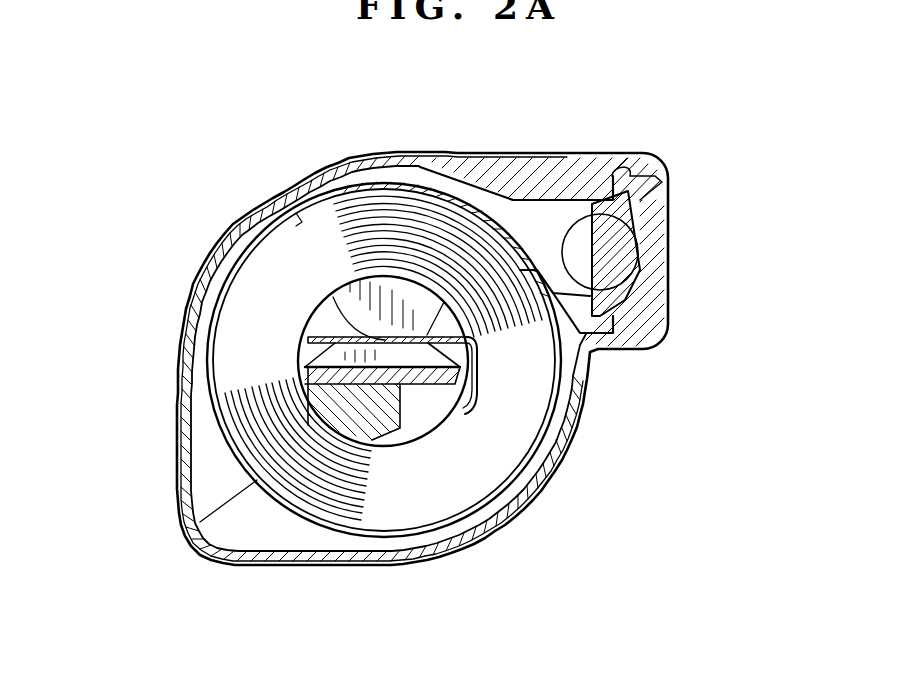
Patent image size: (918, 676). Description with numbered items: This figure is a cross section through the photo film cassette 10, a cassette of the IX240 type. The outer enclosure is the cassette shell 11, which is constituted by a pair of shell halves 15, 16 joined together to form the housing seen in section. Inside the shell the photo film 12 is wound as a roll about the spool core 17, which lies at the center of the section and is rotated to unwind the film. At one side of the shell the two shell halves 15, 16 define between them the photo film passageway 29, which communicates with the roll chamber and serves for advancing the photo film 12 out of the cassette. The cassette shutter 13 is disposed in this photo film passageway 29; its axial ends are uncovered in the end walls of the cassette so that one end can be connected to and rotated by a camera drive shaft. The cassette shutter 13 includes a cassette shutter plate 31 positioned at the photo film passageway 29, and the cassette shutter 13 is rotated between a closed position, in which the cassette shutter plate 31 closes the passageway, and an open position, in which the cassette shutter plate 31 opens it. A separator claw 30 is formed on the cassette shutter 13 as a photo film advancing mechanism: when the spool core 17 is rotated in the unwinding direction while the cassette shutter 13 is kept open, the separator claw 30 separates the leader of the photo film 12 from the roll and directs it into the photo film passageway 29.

The photo film cassette 10 is at (222, 215).
The cassette shell 11 is at (317, 388).
The photo film 12 is at (505, 446).
The cassette shutter 13 is at (667, 186).
The shell half 15 is at (186, 513).
The shell half 16 is at (230, 562).
The spool core 17 is at (373, 430).
The photo film passageway 29 is at (655, 238).
The separator claw 30 is at (529, 278).
The cassette shutter plate 31 is at (577, 258).